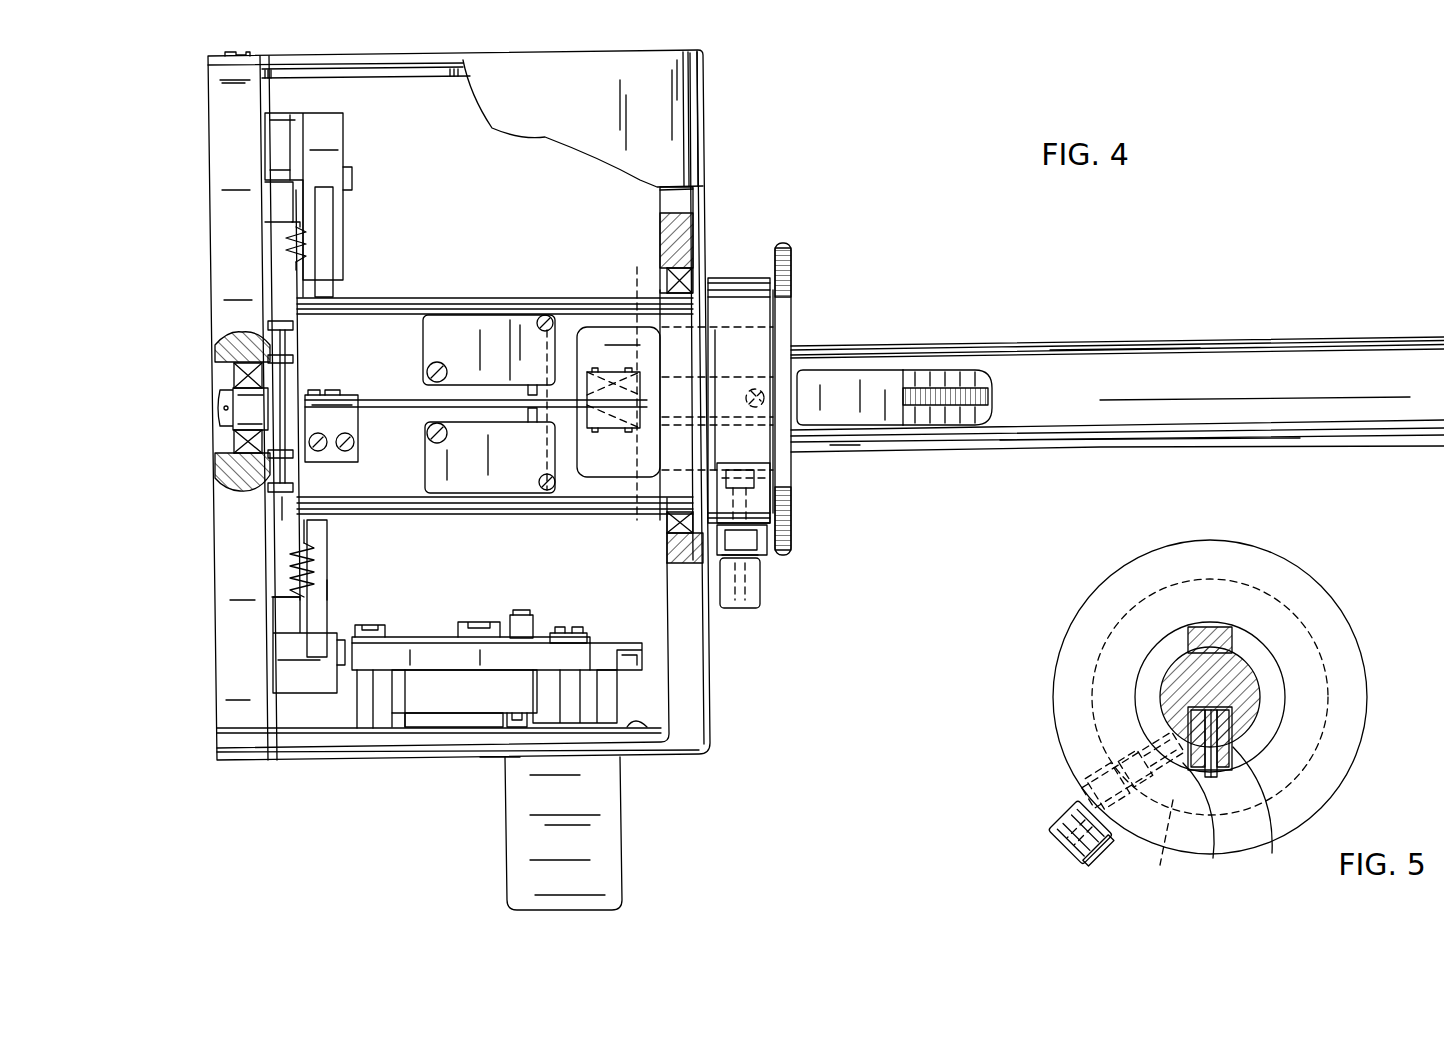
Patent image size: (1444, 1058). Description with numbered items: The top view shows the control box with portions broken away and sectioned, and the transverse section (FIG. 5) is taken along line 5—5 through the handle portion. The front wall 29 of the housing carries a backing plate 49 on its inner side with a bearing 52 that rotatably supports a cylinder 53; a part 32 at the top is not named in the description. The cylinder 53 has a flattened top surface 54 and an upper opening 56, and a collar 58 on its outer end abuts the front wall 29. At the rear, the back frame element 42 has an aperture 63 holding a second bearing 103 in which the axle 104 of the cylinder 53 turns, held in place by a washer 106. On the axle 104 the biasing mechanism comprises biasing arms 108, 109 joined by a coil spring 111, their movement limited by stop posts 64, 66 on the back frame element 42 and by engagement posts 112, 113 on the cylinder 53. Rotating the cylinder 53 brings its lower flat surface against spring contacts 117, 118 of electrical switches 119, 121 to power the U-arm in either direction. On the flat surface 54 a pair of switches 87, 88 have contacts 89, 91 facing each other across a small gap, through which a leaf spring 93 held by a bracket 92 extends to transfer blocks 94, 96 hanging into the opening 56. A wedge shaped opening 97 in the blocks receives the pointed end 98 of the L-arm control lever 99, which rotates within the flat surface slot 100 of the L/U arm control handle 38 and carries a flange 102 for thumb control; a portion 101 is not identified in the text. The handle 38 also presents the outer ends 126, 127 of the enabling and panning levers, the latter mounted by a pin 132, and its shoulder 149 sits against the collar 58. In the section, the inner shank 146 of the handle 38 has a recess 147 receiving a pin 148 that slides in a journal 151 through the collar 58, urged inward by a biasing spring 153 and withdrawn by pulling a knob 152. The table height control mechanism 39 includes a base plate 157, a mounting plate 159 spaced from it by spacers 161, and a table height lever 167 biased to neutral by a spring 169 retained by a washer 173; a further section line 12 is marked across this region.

In FIG. 4, the front wall 29 is at (700, 201).
In FIG. 4, the housing block 32 is at (564, 110).
In FIG. 4, the L/U arm control handle 38 is at (1268, 346).
In FIG. 5, the L/U arm control handle 38 is at (1260, 708).
In FIG. 4, the table height control mechanism 39 is at (630, 855).
In FIG. 4, the back frame element 42 is at (225, 213).
In FIG. 4, the backing plate 49 is at (690, 186).
In FIG. 4, the bearing 52 is at (685, 262).
In FIG. 4, the cylinder 53 is at (360, 305).
In FIG. 4, the flattened top surface 54 is at (420, 375).
In FIG. 4, the upper opening 56 is at (612, 350).
In FIG. 4, the collar 58 is at (750, 280).
In FIG. 5, the collar 58 is at (1100, 635).
In FIG. 4, the aperture 63 is at (215, 440).
In FIG. 4, the upper left stop post 64 is at (282, 505).
In FIG. 4, the upper right stop post 66 is at (272, 303).
In FIG. 4, the switch 87 is at (450, 345).
In FIG. 4, the switch 88 is at (458, 478).
In FIG. 4, the switch contact 89 is at (520, 330).
In FIG. 4, the switch contact 91 is at (530, 432).
In FIG. 4, the bracket 92 is at (350, 443).
In FIG. 4, the leaf spring 93 is at (412, 410).
In FIG. 4, the transfer block 94 is at (595, 365).
In FIG. 4, the transfer block 96 is at (600, 440).
In FIG. 4, the wedge shaped opening 97 is at (637, 520).
In FIG. 4, the pointed end 98 is at (634, 379).
In FIG. 4, the L-arm control lever 99 is at (882, 378).
In FIG. 5, the L-arm control lever 99 is at (1215, 630).
In FIG. 4, the flat surface slot 100 is at (988, 412).
In FIG. 4, the shaft portion 101 is at (820, 430).
In FIG. 4, the upwardly extending flange 102 is at (224, 409).
In FIG. 4, the bearing 103 is at (248, 460).
In FIG. 4, the axle 104 is at (300, 380).
In FIG. 4, the washer 106 is at (232, 383).
In FIG. 4, the biasing arm 108 is at (270, 233).
In FIG. 4, the biasing arm 109 is at (270, 575).
In FIG. 4, the coil spring 111 is at (288, 250).
In FIG. 4, the engagement post 112 is at (275, 488).
In FIG. 4, the engagement post 113 is at (238, 344).
In FIG. 4, the spring contact 117 is at (318, 545).
In FIG. 4, the spring contact 118 is at (330, 208).
In FIG. 4, the electrical switch 119 is at (330, 597).
In FIG. 4, the electrical switch 121 is at (340, 138).
In FIG. 5, the outer end 126 is at (1230, 750).
In FIG. 5, the outer end 127 is at (1212, 777).
In FIG. 4, the pin 132 is at (535, 630).
In FIG. 5, the inner shank 146 is at (1272, 845).
In FIG. 5, the recess 147 is at (1214, 858).
In FIG. 4, the pin 148 is at (775, 500).
In FIG. 5, the pin 148 is at (1110, 752).
In FIG. 4, the shoulder 149 is at (786, 325).
In FIG. 5, the shoulder 149 is at (1305, 607).
In FIG. 4, the journal 151 is at (762, 542).
In FIG. 5, the journal 151 is at (1128, 838).
In FIG. 4, the knob 152 is at (745, 612).
In FIG. 5, the knob 152 is at (1045, 835).
In FIG. 5, the biasing spring 153 is at (1172, 845).
In FIG. 4, the base plate 157 is at (428, 740).
In FIG. 4, the mounting plate 159 is at (370, 660).
In FIG. 4, the spacers 161 is at (372, 705).
In FIG. 4, the table height lever 167 is at (602, 878).
In FIG. 4, the spring 169 is at (418, 635).
In FIG. 4, the washer 173 is at (517, 615).
In FIG. 4, the section line 5— 5 is at (868, 303).
In FIG. 4, the section line 12 is at (170, 657).